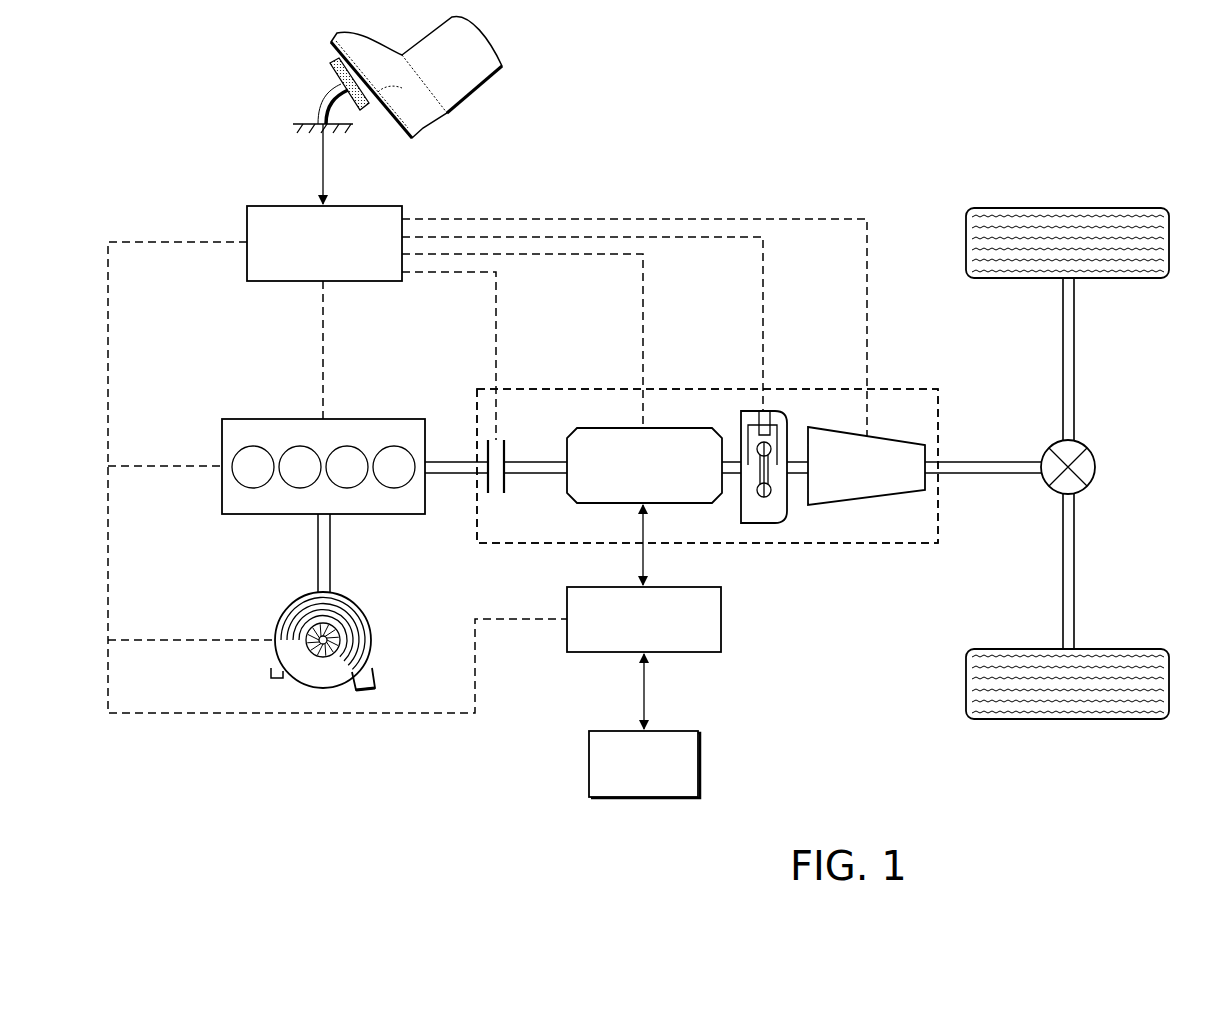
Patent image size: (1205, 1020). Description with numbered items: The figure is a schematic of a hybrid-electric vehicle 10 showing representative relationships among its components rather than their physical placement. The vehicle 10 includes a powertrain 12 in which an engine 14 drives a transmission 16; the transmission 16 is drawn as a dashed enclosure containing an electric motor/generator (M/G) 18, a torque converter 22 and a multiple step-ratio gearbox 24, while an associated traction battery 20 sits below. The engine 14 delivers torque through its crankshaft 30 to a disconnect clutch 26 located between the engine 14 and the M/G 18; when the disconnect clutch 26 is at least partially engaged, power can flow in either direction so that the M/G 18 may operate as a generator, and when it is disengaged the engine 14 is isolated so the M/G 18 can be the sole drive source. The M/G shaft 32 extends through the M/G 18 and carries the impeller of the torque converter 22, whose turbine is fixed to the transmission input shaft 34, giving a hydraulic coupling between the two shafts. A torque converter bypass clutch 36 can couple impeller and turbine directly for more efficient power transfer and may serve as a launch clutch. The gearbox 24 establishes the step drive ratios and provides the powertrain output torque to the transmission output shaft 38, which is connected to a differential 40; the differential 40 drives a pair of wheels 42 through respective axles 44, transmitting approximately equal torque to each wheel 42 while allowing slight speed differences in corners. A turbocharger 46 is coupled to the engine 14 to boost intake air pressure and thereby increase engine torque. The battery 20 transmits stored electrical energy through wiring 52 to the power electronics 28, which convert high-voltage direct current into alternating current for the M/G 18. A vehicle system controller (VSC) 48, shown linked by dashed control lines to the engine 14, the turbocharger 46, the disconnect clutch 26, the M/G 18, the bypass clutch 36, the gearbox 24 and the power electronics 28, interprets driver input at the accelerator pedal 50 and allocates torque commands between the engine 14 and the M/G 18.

The hybrid-electric vehicle 10 is at (842, 121).
The powertrain 12 is at (328, 759).
The engine 14 is at (277, 419).
The transmission 16 is at (715, 389).
The electric motor/generator (M/G) 18 is at (613, 428).
The traction battery 20 is at (589, 765).
The torque converter 22 is at (762, 523).
The gearbox 24 is at (866, 500).
The disconnect clutch 26 is at (505, 482).
The power electronics 28 is at (567, 603).
The crankshaft 30 is at (459, 460).
The M/G shaft 32 is at (523, 460).
The transmission input shaft 34 is at (797, 460).
The torque converter bypass clutch 36 is at (765, 411).
The transmission output shaft 38 is at (983, 458).
The differential 40 is at (1096, 467).
The wheels 42 is at (1068, 208).
The axles 44 is at (1076, 362).
The turbocharger 46 is at (287, 603).
The vehicle system controller (VSC) 48 is at (283, 206).
The accelerator pedal 50 is at (333, 78).
The wiring 52 is at (645, 697).